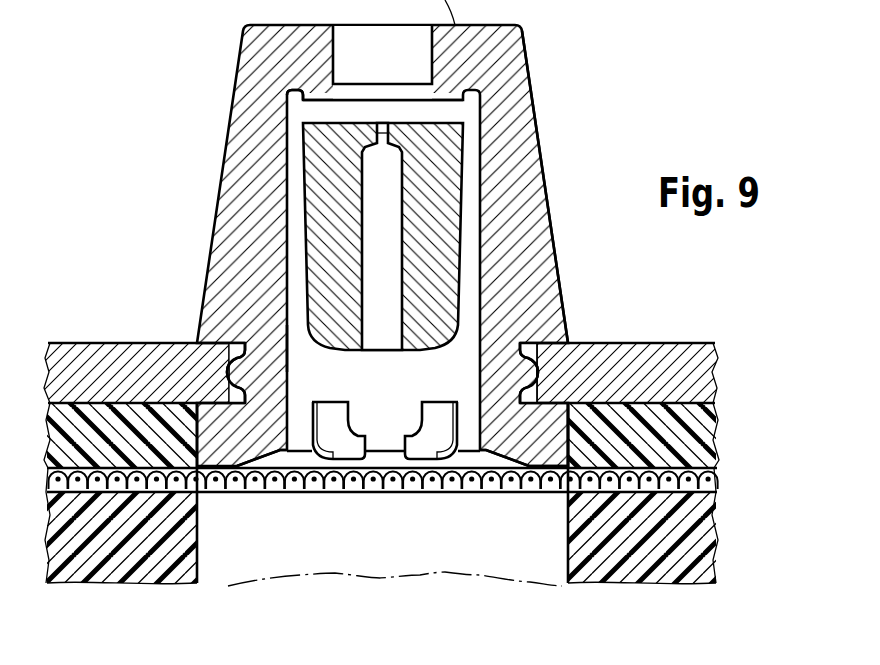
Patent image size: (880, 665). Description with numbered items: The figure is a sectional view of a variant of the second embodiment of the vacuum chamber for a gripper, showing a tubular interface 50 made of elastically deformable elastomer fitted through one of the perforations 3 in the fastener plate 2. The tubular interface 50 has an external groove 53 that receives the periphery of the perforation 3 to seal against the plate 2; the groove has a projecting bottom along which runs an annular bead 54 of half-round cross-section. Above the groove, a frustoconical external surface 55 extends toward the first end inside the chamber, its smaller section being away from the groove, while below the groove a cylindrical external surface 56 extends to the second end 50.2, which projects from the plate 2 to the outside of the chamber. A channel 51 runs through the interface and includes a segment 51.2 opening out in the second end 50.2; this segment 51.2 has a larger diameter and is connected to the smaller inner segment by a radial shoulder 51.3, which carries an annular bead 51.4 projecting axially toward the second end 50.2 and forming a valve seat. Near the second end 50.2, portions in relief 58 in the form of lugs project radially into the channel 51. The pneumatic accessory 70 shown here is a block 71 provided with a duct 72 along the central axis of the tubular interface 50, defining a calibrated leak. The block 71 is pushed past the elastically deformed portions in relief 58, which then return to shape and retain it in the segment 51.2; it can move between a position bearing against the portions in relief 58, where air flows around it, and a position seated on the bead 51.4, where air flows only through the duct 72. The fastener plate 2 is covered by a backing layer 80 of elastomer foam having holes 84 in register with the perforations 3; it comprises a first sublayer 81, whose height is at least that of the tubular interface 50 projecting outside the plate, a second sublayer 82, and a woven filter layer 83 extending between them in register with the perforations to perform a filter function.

The fastener plate 2 is at (712, 368).
The perforations 3 is at (228, 339).
The tubular interface 50 is at (393, 334).
The second end 50.2 is at (545, 493).
The channel 51 is at (298, 252).
The segment 51.2 is at (287, 367).
The radial shoulder 51.3 is at (292, 112).
The annular bead 51.4 is at (302, 100).
The external groove 53 is at (563, 403).
The annular bead 54 is at (558, 403).
The frustoconical external surface 55 is at (540, 153).
The cylindrical external surface 56 is at (571, 447).
The portions in relief 58 is at (422, 429).
The pneumatic accessory 70 is at (462, 243).
The block 71 is at (330, 207).
The duct 72 is at (385, 132).
The backing layer 80 is at (438, 523).
The first sublayer 81 is at (685, 452).
The second sublayer 82 is at (685, 535).
The filter layer 83 is at (270, 493).
The holes 84 is at (197, 550).